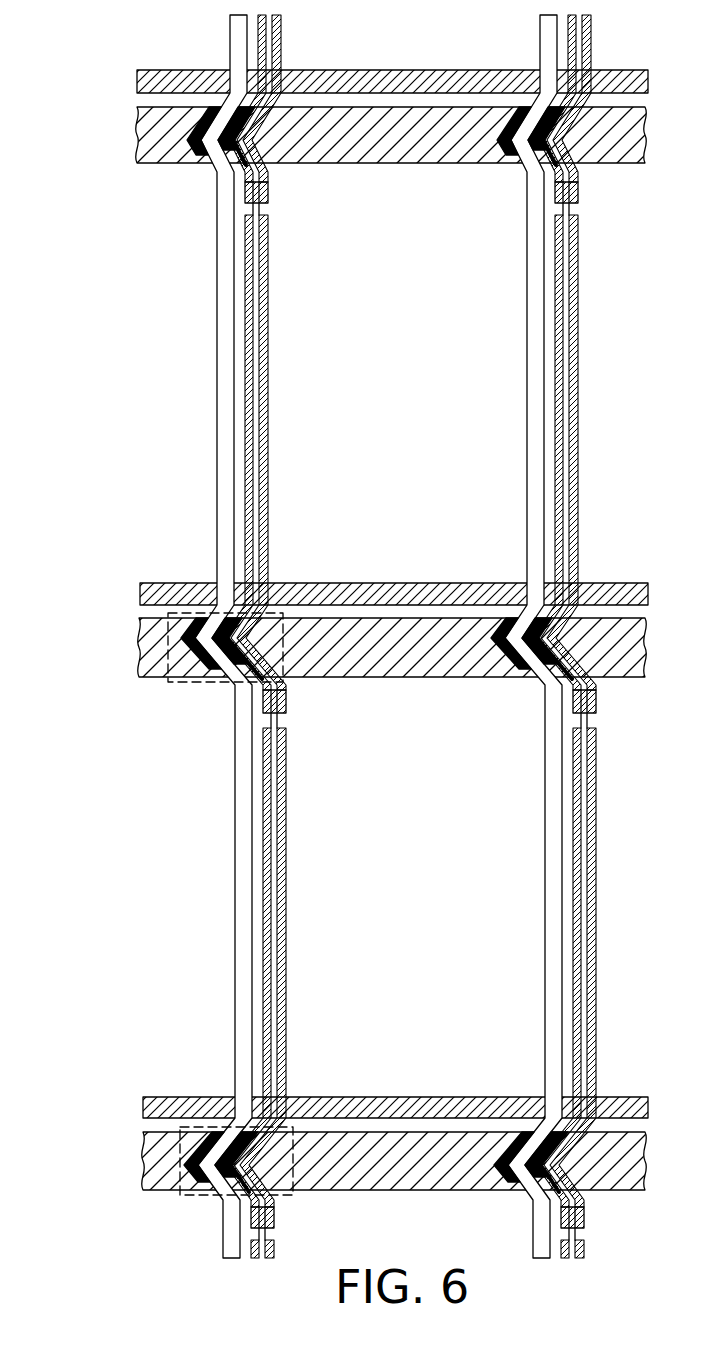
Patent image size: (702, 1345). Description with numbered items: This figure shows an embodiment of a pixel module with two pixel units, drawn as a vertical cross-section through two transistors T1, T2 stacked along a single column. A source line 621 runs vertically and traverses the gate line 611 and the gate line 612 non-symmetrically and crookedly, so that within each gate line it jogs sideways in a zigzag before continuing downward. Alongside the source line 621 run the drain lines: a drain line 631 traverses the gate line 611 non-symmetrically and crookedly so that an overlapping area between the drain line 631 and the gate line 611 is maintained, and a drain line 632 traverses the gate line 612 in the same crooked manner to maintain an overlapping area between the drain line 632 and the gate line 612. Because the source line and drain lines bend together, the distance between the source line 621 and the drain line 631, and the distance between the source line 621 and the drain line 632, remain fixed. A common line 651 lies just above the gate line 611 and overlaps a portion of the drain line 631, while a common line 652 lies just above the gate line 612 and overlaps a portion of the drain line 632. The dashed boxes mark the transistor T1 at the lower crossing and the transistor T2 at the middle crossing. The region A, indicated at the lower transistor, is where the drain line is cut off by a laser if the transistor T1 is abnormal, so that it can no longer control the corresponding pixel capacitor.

The source line 621 is at (226, 310).
The drain line 632 is at (250, 206).
The drain line 631 is at (262, 718).
The gate line 612 is at (140, 640).
The common line 652 is at (140, 590).
The gate line 611 is at (168, 1158).
The common line 651 is at (143, 1105).
The transistor T2 is at (195, 612).
The transistor T1 is at (203, 1127).
The region A is at (233, 1130).